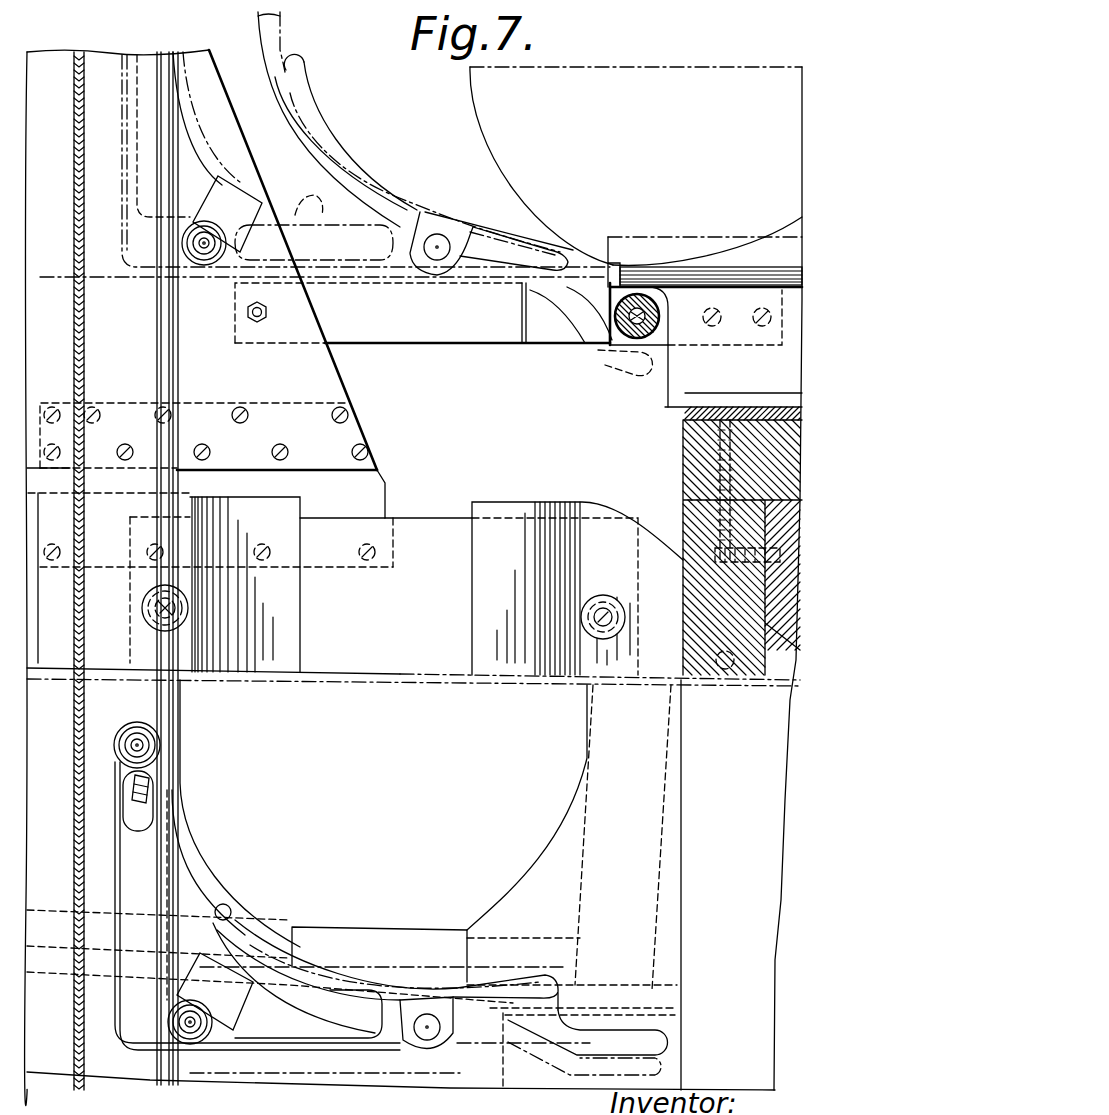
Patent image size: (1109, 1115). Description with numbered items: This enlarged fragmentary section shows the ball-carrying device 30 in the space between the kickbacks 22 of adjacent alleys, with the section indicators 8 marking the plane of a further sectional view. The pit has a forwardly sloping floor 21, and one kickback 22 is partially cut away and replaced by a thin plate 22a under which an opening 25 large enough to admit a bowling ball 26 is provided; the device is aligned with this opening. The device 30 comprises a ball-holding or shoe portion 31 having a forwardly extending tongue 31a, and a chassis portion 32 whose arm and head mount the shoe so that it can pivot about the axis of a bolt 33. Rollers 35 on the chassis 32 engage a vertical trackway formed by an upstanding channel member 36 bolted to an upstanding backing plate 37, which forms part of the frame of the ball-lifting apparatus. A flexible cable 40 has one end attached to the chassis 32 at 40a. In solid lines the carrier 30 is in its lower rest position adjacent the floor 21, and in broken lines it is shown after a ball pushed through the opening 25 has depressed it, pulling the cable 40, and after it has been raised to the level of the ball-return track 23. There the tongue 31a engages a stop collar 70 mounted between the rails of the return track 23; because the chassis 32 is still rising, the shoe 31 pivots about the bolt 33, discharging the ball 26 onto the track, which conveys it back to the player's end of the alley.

The section line 8- 8 is at (50, 290).
The floor 21 is at (57, 905).
The kickback 22 is at (653, 543).
The thin plate 22a is at (433, 527).
The ball-return track 23 is at (772, 282).
The opening 25 is at (572, 806).
The bowling ball 26 is at (522, 151).
The ball-carrying device 30 is at (378, 158).
The ball-holding portion 31 is at (425, 193).
The tongue 31a is at (625, 362).
The chassis portion 32 is at (322, 193).
The bolt 33 is at (437, 255).
The rollers 35 is at (215, 262).
The channel member 36 is at (178, 487).
The backing plate 37 is at (73, 598).
The flexible cable 40 is at (165, 346).
The cable attachment point 40a is at (150, 785).
The stop collar 70 is at (627, 326).